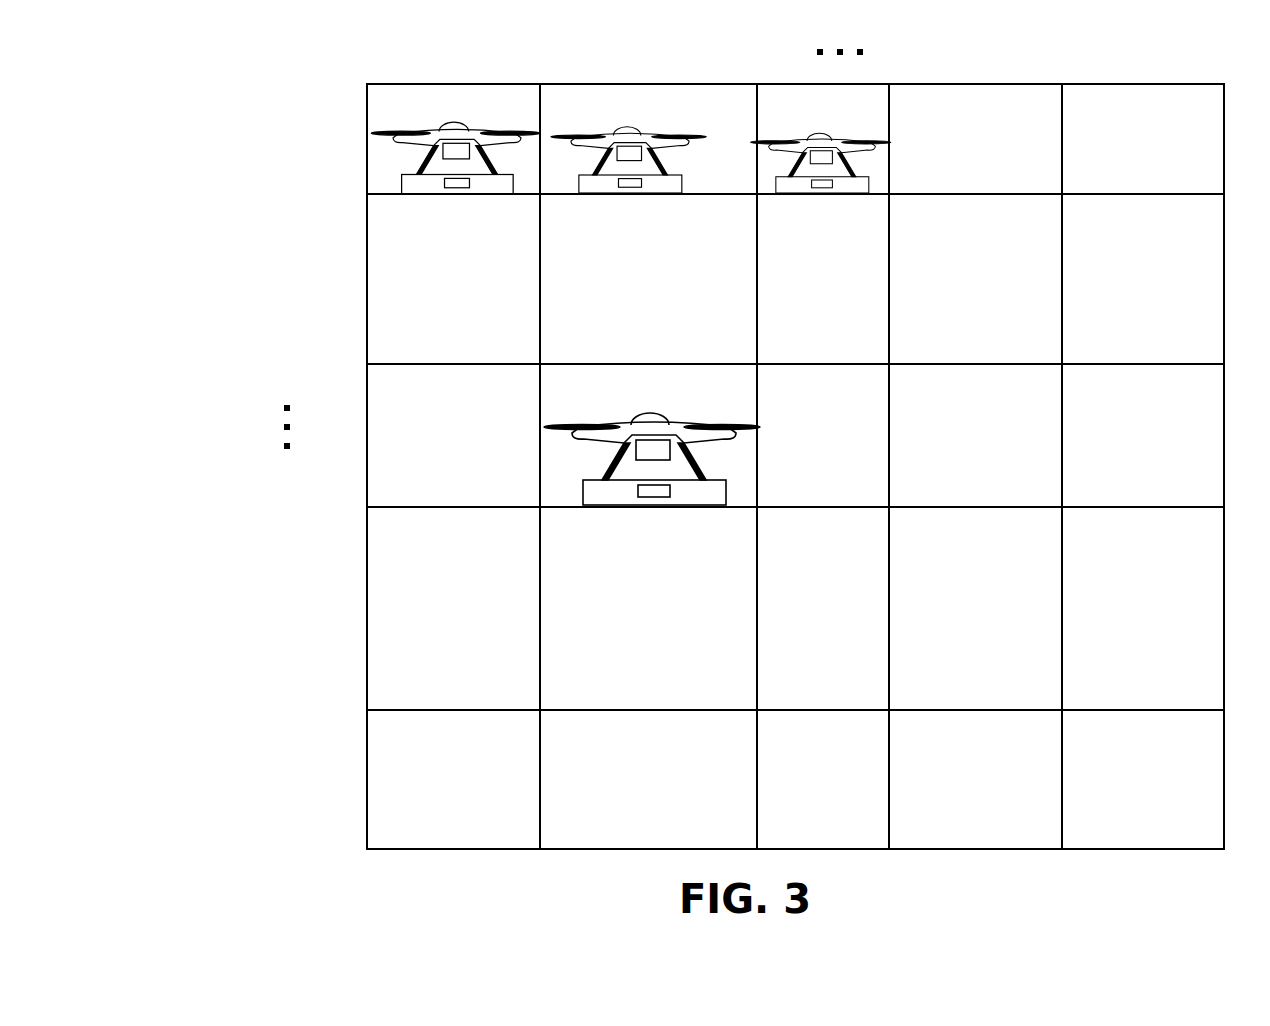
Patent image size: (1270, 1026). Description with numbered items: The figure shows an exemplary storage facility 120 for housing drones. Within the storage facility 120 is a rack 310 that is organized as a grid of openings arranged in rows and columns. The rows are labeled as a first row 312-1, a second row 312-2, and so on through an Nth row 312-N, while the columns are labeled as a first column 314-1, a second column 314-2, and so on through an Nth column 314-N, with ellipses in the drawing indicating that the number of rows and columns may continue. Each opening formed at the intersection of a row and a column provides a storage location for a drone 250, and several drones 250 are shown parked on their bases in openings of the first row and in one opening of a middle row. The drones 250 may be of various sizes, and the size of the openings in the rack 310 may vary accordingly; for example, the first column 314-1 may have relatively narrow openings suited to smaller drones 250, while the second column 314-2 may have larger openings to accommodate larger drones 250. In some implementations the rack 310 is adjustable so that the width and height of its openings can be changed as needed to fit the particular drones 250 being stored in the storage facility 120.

The storage facility 120 is at (262, 100).
The rack 310 is at (234, 463).
The row 312-1 is at (367, 139).
The row 312-2 is at (367, 280).
The row 312-N is at (367, 750).
The column 314-1 is at (425, 83).
The column 314-2 is at (625, 83).
The column 314-N is at (1113, 81).
The drone 250 is at (842, 132).